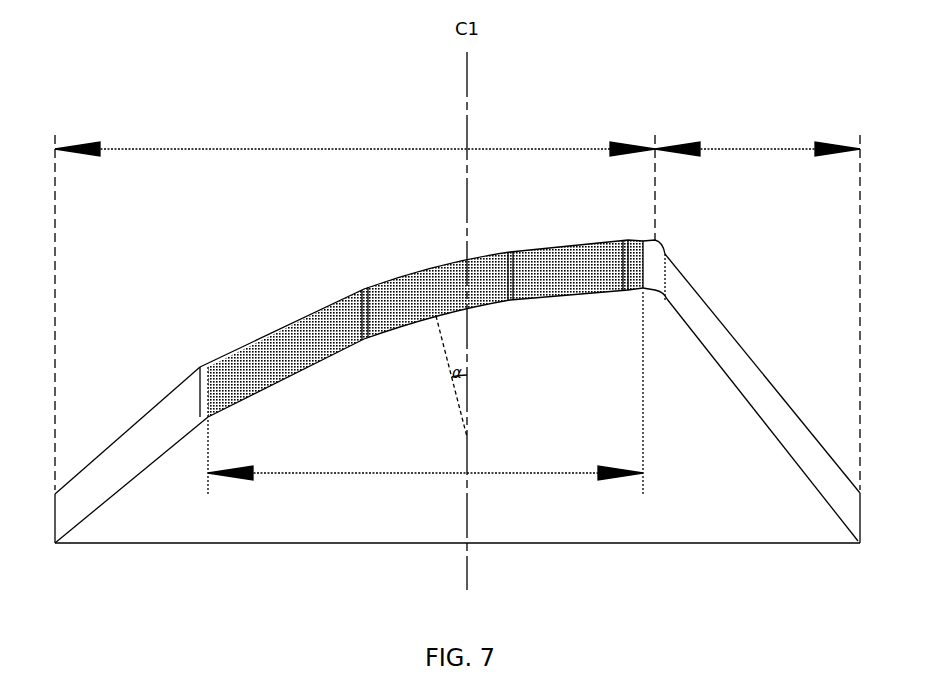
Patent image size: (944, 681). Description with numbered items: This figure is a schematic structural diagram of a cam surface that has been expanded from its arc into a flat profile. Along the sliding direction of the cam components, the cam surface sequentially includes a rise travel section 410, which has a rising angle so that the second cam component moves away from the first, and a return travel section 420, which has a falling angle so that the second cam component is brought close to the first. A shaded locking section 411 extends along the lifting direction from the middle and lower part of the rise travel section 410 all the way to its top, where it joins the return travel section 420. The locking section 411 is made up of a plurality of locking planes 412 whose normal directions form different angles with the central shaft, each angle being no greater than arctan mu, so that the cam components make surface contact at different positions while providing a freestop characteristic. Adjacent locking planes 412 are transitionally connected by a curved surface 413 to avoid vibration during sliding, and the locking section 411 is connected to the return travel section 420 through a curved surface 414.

The rise travel section 410 is at (355, 133).
The locking section 411 is at (425, 393).
The locking plane 412 is at (257, 355).
The curved surface 413 is at (364, 336).
The curved surface 414 is at (662, 254).
The return travel section 420 is at (757, 132).